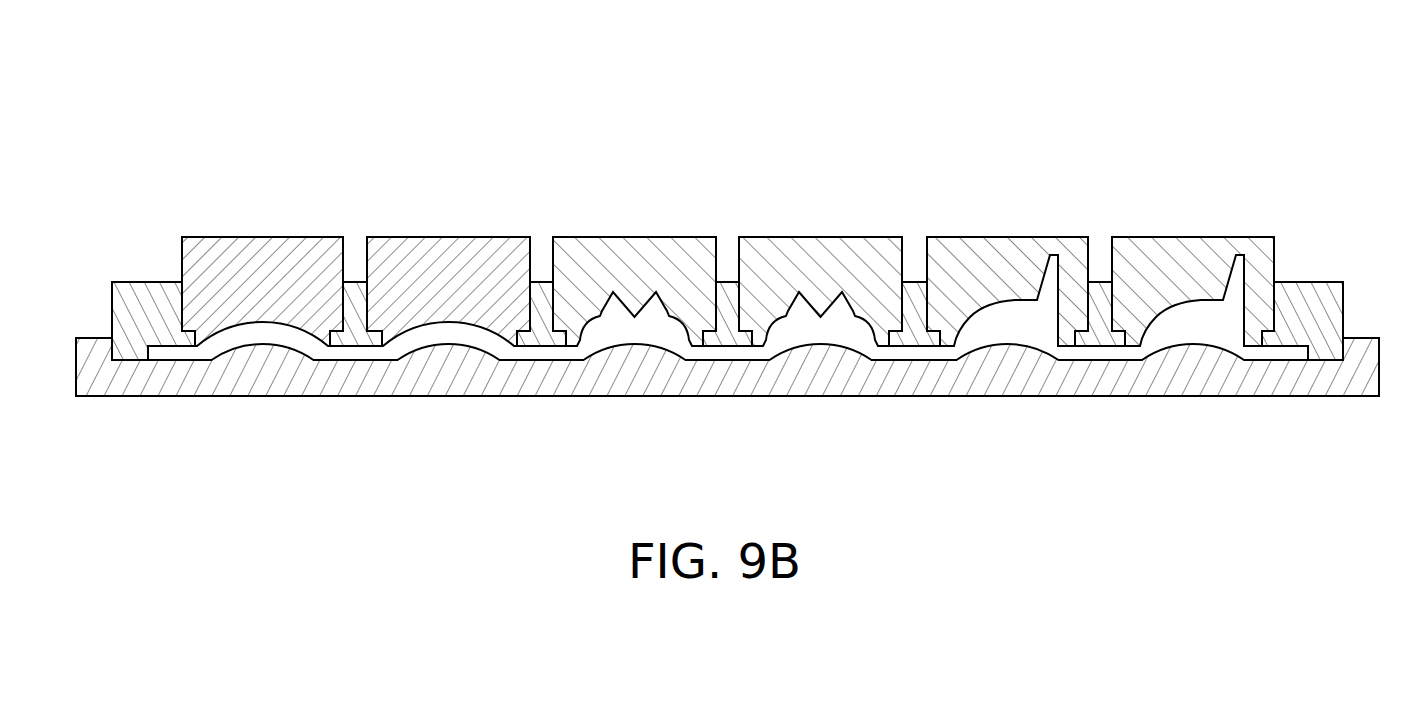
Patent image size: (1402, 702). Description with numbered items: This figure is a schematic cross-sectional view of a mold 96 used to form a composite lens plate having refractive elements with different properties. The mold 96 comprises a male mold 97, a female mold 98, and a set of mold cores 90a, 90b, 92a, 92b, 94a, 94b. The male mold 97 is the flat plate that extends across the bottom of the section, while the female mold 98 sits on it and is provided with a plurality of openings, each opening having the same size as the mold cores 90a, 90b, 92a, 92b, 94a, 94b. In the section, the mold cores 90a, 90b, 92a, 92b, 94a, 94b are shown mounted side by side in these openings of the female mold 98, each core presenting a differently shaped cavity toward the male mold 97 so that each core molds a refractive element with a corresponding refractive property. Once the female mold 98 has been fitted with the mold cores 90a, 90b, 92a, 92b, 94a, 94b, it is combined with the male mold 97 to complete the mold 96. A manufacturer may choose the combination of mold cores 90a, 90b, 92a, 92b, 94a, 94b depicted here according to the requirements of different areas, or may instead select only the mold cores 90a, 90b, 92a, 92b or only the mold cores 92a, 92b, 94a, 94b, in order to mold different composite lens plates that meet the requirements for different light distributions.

The mold 96 is at (441, 64).
The male mold 97 is at (993, 382).
The female mold 98 is at (142, 290).
The mold core 90a is at (262, 240).
The mold core 90b is at (452, 240).
The mold core 92a is at (632, 240).
The mold core 92b is at (822, 240).
The mold core 94a is at (1005, 240).
The mold core 94b is at (1190, 240).